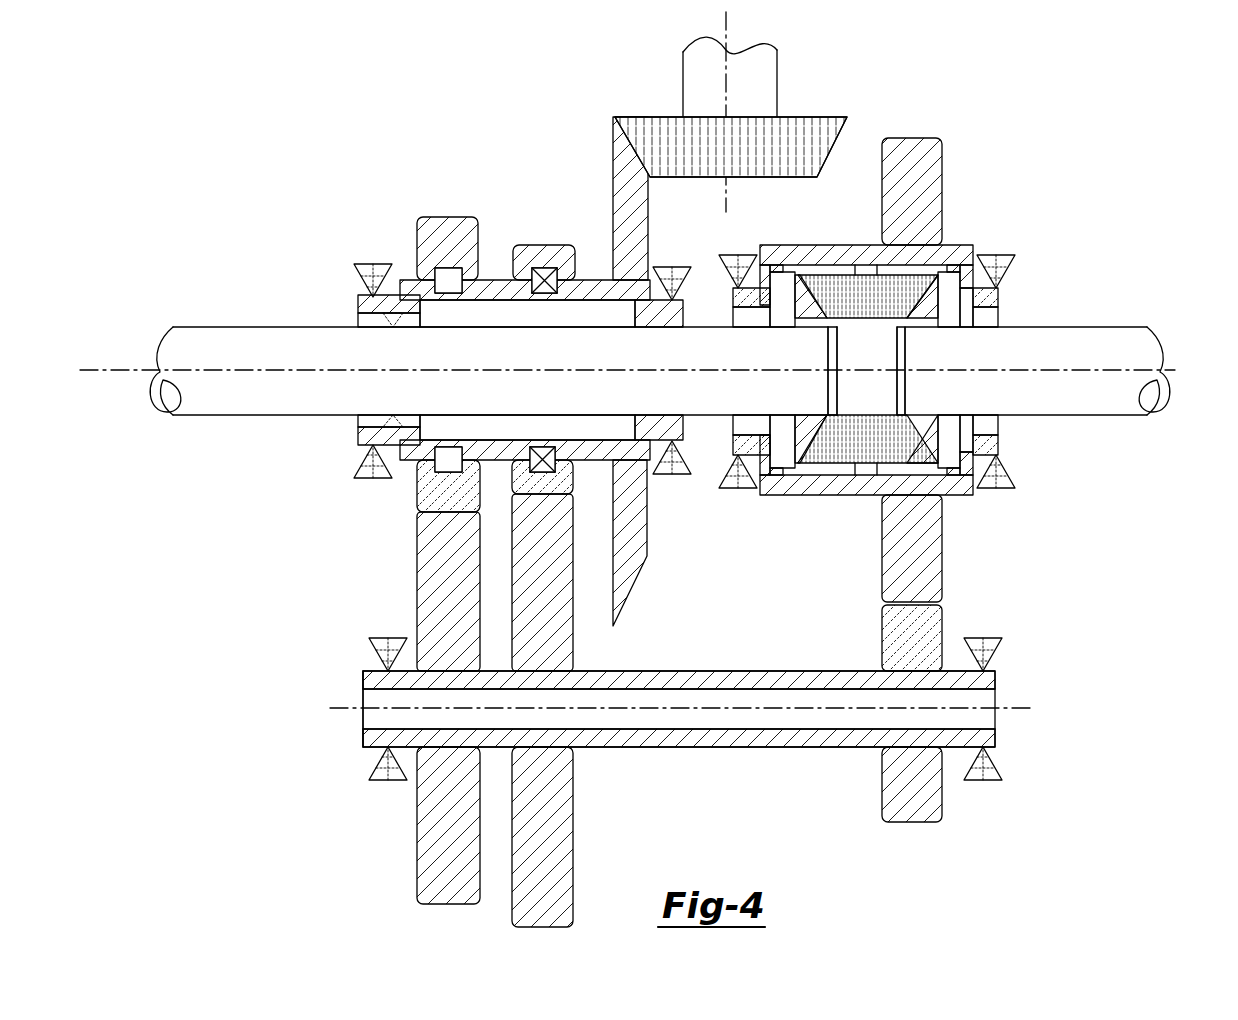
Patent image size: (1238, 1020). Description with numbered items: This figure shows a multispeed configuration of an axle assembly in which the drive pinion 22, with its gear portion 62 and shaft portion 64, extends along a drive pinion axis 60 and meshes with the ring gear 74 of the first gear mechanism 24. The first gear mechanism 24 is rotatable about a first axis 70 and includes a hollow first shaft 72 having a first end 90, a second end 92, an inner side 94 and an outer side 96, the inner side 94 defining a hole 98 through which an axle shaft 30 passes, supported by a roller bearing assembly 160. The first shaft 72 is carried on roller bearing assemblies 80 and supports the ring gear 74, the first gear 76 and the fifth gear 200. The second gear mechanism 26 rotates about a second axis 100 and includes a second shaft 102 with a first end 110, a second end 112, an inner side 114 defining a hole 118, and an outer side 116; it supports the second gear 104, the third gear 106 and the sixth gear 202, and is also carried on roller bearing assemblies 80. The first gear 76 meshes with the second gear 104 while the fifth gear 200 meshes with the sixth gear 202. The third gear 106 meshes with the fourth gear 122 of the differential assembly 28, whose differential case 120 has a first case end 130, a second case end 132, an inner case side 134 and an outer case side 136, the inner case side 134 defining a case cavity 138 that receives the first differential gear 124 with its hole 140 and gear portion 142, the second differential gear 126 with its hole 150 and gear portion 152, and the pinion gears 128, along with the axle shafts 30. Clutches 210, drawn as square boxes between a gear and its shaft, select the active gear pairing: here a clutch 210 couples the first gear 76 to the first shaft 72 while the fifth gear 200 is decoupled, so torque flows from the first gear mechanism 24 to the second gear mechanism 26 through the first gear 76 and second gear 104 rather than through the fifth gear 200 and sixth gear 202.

The drive pinion 22 is at (746, 161).
The gear portion 62 is at (837, 143).
The first gear mechanism 24 is at (352, 278).
The second gear mechanism 26 is at (352, 733).
The differential assembly 28 is at (1020, 301).
The axle shaft 30 is at (234, 365).
The drive pinion axis 60 is at (724, 35).
The shaft portion 64 is at (757, 93).
The first axis 70 is at (1196, 377).
The first shaft 72 is at (410, 280).
The ring gear 74 is at (613, 172).
The first gear 76 is at (536, 245).
The roller bearing assembly 80 is at (372, 262).
The first end 90 is at (358, 433).
The second end 92 is at (684, 437).
The inner side 94 is at (587, 440).
The outer side 96 is at (604, 461).
The hole 98 is at (360, 321).
The second axis 100 is at (1025, 708).
The second shaft 102 is at (703, 750).
The second gear 104 is at (556, 898).
The third gear 106 is at (912, 823).
The first end 110 is at (364, 680).
The second end 112 is at (1003, 670).
The inner side 114 is at (822, 690).
The outer side 116 is at (740, 748).
The hole 118 is at (383, 702).
The differential case 120 is at (847, 497).
The fourth gear 122 is at (905, 138).
The first differential gear 124 is at (791, 369).
The second differential gear 126 is at (948, 369).
The pinion gear 128 is at (878, 310).
The first case end 130 is at (733, 440).
The second case end 132 is at (1000, 452).
The inner case side 134 is at (800, 268).
The outer case side 136 is at (842, 246).
The case cavity 138 is at (945, 245).
The first differential gear hole 140 is at (838, 330).
The gear portion 142 is at (825, 447).
The second differential gear hole 150 is at (898, 412).
The gear portion 152 is at (912, 447).
The roller bearing assembly 160 is at (360, 417).
The fifth gear 200 is at (455, 218).
The sixth gear 202 is at (460, 870).
The clutch 210 is at (532, 448).